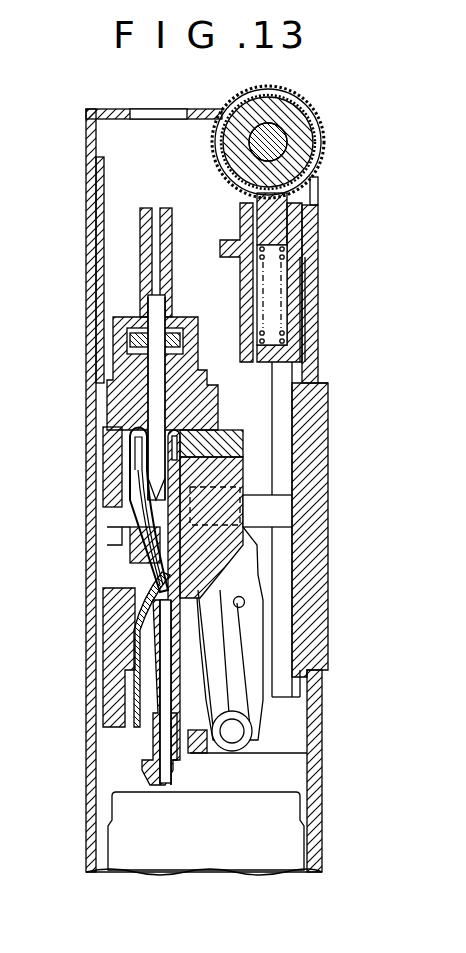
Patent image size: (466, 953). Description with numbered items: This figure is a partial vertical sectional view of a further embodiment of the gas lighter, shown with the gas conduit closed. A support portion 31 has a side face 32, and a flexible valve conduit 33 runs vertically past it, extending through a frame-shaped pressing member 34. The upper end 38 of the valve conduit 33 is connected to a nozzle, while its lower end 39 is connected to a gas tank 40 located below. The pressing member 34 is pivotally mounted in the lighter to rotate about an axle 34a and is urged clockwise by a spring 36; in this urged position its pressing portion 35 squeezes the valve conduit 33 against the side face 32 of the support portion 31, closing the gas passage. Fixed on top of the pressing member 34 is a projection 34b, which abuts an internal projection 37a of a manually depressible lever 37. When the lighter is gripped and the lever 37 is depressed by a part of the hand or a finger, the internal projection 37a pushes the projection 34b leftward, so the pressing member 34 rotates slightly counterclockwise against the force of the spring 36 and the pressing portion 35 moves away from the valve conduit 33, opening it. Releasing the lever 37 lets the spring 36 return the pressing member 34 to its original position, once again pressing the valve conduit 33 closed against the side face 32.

The support portion 31 is at (165, 580).
The side face 32 is at (132, 550).
The flexible valve conduit 33 is at (150, 508).
The pressing member 34 is at (247, 563).
The axle 34a is at (243, 738).
The projection 34b is at (155, 492).
The pressing portion 35 is at (132, 537).
The spring 36 is at (240, 648).
The manually depressible lever 37 is at (318, 430).
The internal projection 37a is at (273, 512).
The upper end of the valve conduit 38 is at (118, 435).
The lower end of the valve conduit 39 is at (138, 668).
The gas tank 40 is at (228, 853).